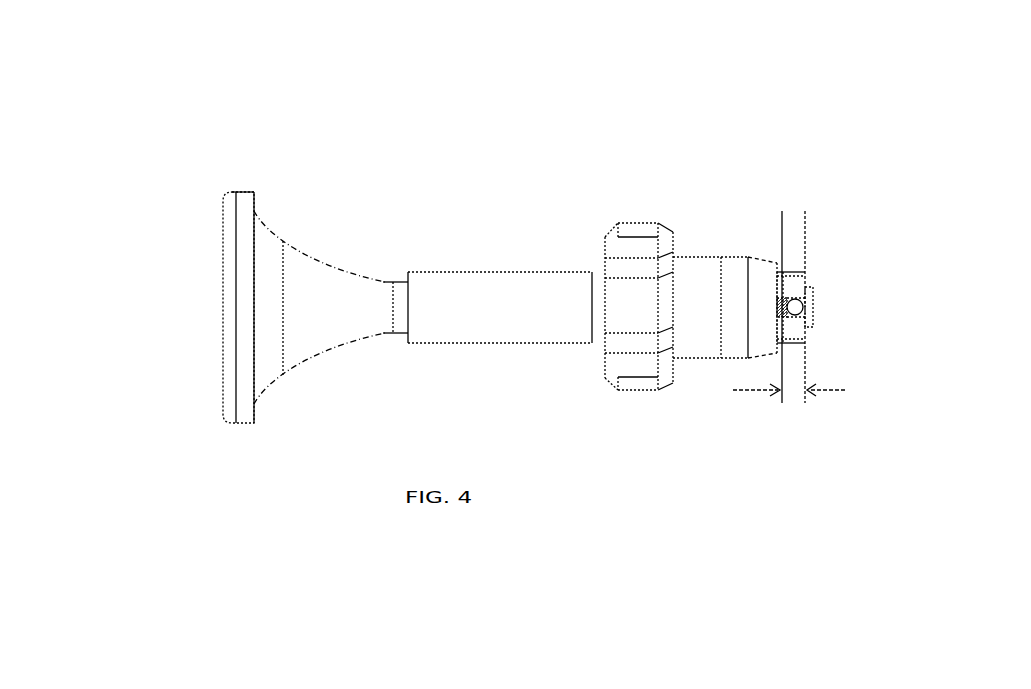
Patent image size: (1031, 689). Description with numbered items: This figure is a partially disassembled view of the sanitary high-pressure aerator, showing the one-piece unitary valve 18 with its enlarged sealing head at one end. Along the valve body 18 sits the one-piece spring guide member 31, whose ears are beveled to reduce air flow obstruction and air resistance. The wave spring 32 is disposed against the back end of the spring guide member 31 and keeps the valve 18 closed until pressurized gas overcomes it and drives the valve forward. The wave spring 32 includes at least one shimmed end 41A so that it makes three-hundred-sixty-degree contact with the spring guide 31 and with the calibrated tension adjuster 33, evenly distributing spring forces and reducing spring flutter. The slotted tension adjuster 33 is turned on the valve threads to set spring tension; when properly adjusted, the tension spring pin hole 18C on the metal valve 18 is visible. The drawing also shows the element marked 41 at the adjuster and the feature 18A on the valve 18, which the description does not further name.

The one-piece unitary valve 18 is at (220, 218).
The opening 18A is at (813, 312).
The tension spring pin hole 18C is at (797, 313).
The spring guide member 31 is at (493, 270).
The wave spring 32 is at (683, 257).
The calibrated tension adjuster 33 is at (752, 257).
The wall 41 is at (793, 407).
The shimmed end 41A is at (747, 260).